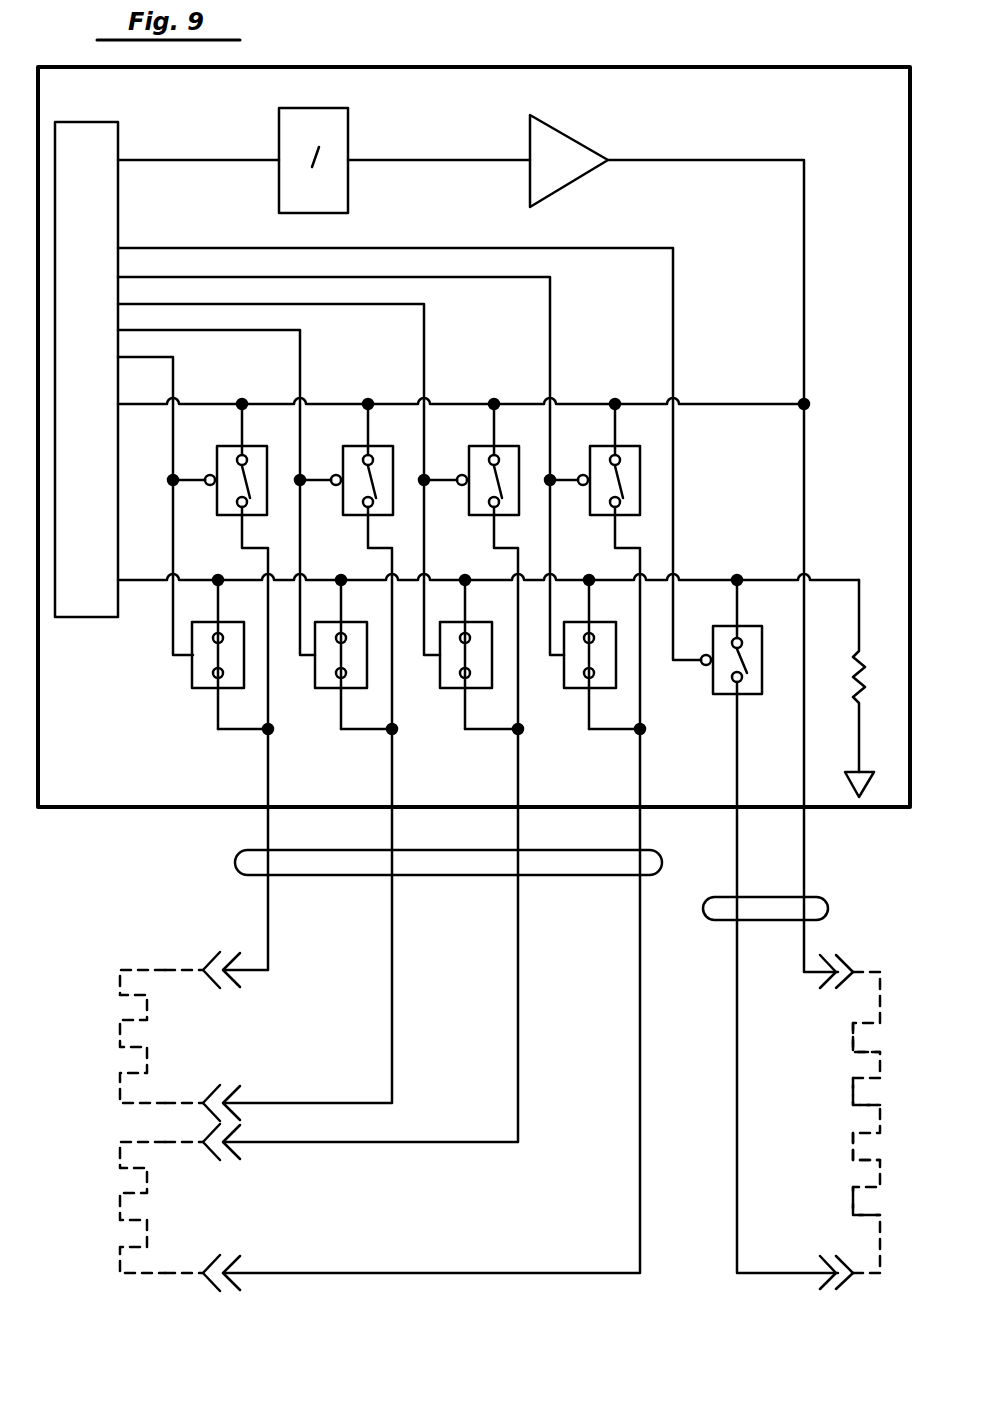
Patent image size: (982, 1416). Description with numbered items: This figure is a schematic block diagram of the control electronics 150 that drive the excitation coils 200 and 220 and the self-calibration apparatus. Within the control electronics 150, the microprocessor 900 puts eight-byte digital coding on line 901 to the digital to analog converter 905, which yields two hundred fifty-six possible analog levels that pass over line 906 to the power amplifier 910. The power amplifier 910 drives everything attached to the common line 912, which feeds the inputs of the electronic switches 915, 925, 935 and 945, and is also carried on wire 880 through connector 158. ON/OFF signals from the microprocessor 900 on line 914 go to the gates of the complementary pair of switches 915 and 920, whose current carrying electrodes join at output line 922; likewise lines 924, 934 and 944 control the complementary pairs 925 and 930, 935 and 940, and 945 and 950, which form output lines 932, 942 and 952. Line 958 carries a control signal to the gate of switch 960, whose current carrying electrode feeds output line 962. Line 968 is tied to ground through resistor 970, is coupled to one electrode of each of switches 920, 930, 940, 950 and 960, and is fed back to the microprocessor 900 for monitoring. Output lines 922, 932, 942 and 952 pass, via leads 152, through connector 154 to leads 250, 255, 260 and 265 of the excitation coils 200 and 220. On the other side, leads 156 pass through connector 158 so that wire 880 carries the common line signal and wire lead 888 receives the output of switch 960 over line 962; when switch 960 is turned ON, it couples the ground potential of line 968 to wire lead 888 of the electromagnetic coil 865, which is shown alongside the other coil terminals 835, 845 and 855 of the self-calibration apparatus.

The control circuitry 150 is at (641, 67).
The leads 152 is at (235, 862).
The connector 154 is at (232, 955).
The leads 156 is at (822, 897).
The connector 158 is at (830, 985).
The excitation coil 200 is at (120, 1038).
The excitation coil 220 is at (120, 1210).
The lead 250 is at (165, 968).
The lead 255 is at (185, 1100).
The lead 260 is at (180, 1145).
The lead 265 is at (160, 1276).
The terminal 835 is at (853, 1050).
The terminal 845 is at (853, 1095).
The terminal 855 is at (853, 1148).
The electromagnetic coil 865 is at (853, 1205).
The wire 880 is at (862, 972).
The wire lead 888 is at (872, 1276).
The microprocessor 900 is at (110, 606).
The line 901 is at (200, 162).
The digital to analog converter 905 is at (320, 213).
The line 906 is at (488, 162).
The power amplifier 910 is at (575, 185).
The common line 912 is at (710, 162).
The line 914 is at (173, 378).
The electronic switch 915 is at (217, 462).
The electronic switch 920 is at (192, 680).
The output line 922 is at (268, 787).
The line 924 is at (300, 360).
The electronic switch 925 is at (343, 462).
The electronic switch 930 is at (315, 682).
The output line 932 is at (392, 787).
The line 934 is at (424, 348).
The electronic switch 935 is at (469, 462).
The electronic switch 940 is at (440, 682).
The output line 942 is at (518, 787).
The line 944 is at (550, 330).
The electronic switch 945 is at (590, 462).
The electronic switch 950 is at (564, 682).
The output line 952 is at (640, 787).
The line 958 is at (673, 312).
The electronic switch 960 is at (713, 692).
The output line 962 is at (737, 787).
The line 968 is at (845, 580).
The resistor 970 is at (852, 692).